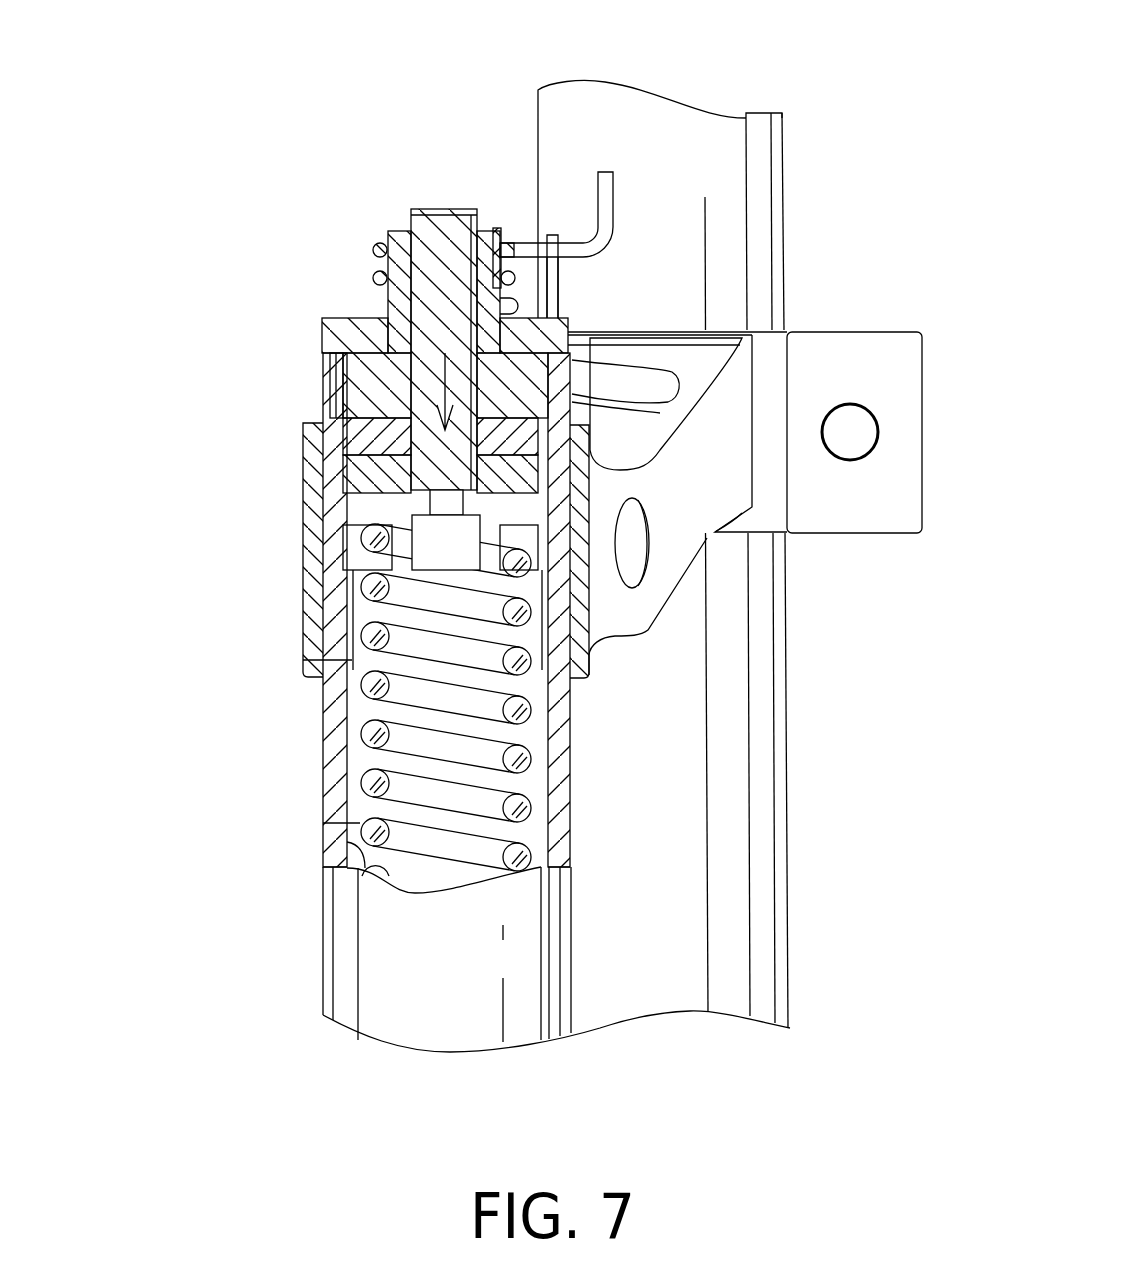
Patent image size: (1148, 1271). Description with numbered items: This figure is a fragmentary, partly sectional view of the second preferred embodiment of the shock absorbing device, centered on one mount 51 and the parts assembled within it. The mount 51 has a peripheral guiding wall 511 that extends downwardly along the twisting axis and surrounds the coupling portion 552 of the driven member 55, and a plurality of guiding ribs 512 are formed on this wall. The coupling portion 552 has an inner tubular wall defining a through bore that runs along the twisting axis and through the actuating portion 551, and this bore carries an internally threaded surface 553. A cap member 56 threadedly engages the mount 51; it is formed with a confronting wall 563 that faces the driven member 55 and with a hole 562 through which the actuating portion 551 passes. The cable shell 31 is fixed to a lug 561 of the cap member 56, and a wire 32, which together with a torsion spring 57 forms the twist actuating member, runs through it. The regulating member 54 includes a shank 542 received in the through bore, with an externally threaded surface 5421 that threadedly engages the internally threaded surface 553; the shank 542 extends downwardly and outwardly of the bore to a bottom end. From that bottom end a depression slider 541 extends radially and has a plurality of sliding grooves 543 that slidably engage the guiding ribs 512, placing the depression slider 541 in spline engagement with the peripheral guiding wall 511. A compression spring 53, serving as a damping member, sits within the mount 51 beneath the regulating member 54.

The cable shell 31 is at (610, 196).
The wire 32 is at (514, 244).
The lug 561 is at (553, 283).
The hole 562 is at (567, 328).
The shank 542 is at (443, 312).
The actuating portion 551 is at (398, 236).
The internally threaded surface 553 is at (397, 160).
The externally threaded surface 5421 is at (497, 232).
The torsion spring 57 is at (373, 250).
The cap member 56 is at (330, 346).
The confronting wall 563 is at (336, 372).
The driven member 55 is at (350, 385).
The coupling portion 552 is at (360, 422).
The regulating member 54 is at (380, 470).
The sliding grooves 543 is at (305, 556).
The depression slider 541 is at (333, 612).
The mount 51 is at (330, 773).
The guiding ribs 512 is at (303, 661).
The compression spring 53 is at (317, 823).
The peripheral guiding wall 511 is at (368, 862).